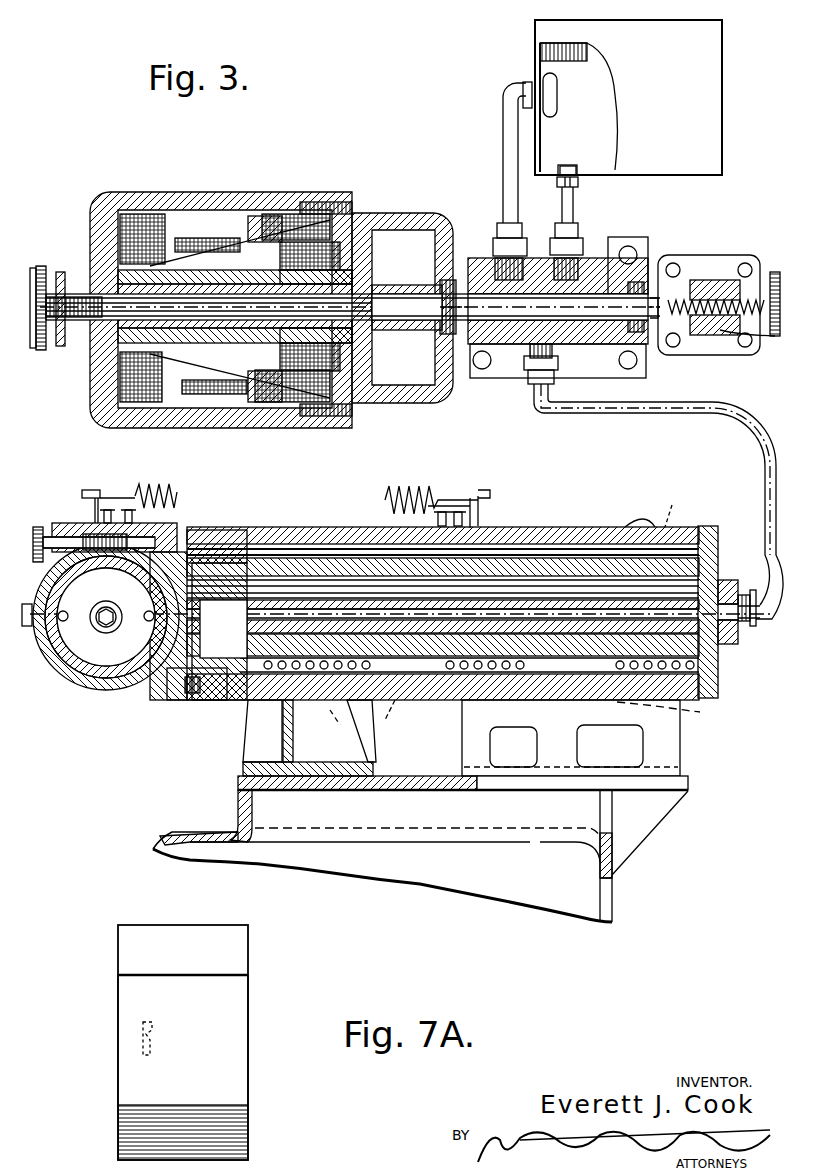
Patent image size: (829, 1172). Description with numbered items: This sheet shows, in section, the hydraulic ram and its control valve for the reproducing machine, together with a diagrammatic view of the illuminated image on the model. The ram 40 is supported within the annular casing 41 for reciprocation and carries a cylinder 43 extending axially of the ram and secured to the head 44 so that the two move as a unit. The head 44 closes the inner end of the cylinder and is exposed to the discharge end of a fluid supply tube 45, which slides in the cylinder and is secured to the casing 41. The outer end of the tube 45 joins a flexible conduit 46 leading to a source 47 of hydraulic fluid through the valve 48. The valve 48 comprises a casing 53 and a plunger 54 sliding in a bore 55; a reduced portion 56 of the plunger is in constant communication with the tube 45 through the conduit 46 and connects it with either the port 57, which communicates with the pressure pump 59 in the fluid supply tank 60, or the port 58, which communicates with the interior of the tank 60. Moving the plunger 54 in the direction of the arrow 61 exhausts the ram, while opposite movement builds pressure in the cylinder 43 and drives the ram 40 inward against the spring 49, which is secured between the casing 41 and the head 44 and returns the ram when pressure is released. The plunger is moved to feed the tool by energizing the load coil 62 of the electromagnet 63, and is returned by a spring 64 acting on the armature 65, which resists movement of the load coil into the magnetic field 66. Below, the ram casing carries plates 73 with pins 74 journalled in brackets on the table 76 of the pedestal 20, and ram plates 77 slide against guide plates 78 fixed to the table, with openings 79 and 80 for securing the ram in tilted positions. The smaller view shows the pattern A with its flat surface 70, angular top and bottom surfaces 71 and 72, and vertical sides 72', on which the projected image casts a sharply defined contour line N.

In FIG. 3, the pedestal 20 is at (188, 830).
In FIG. 3, the ram 40 is at (490, 560).
In FIG. 3, the annular casing 41 is at (568, 536).
In FIG. 3, the cylinder 43 is at (475, 605).
In FIG. 3, the head 44 is at (167, 675).
In FIG. 3, the fluid supply tube 45 is at (700, 578).
In FIG. 3, the flexible conduit 46 is at (760, 455).
In FIG. 3, the source of hydraulic fluid medium 47 is at (535, 48).
In FIG. 3, the valve 48 is at (596, 258).
In FIG. 3, the spring 49 is at (148, 500).
In FIG. 3, the valve casing 53 is at (596, 348).
In FIG. 3, the valve plunger 54 is at (595, 300).
In FIG. 3, the bore 55 is at (520, 352).
In FIG. 3, the reduced portion 56 is at (552, 258).
In FIG. 3, the port 57 is at (492, 258).
In FIG. 3, the port 58 is at (580, 258).
In FIG. 3, the pressure pump 59 is at (557, 96).
In FIG. 3, the fluid supply tank 60 is at (712, 108).
In FIG. 3, the arrow 61 is at (398, 345).
In FIG. 3, the load coil 62 is at (300, 245).
In FIG. 3, the electromagnet 63 is at (272, 192).
In FIG. 3, the spring 64 is at (360, 292).
In FIG. 3, the armature 65 is at (372, 322).
In FIG. 3, the magnetic field 66 is at (252, 360).
In FIG. 7A, the flat surface 70 is at (240, 1076).
In FIG. 7A, the top angularly extending surface 71 is at (232, 950).
In FIG. 7A, the bottom angularly extending surface 72 is at (205, 1132).
In FIG. 7A, the vertical sides 72' is at (182, 1040).
In FIG. 3, the plates 73 is at (440, 700).
In FIG. 3, the pin 74 is at (352, 718).
In FIG. 3, the table 76 is at (240, 795).
In FIG. 3, the ram plates 77 is at (674, 714).
In FIG. 3, the guide plates 78 is at (680, 740).
In FIG. 3, the opening 79 is at (662, 503).
In FIG. 3, the opening 80 is at (712, 676).
In FIG. 7A, the pattern A is at (246, 1002).
In FIG. 7A, the contour line N is at (155, 1032).